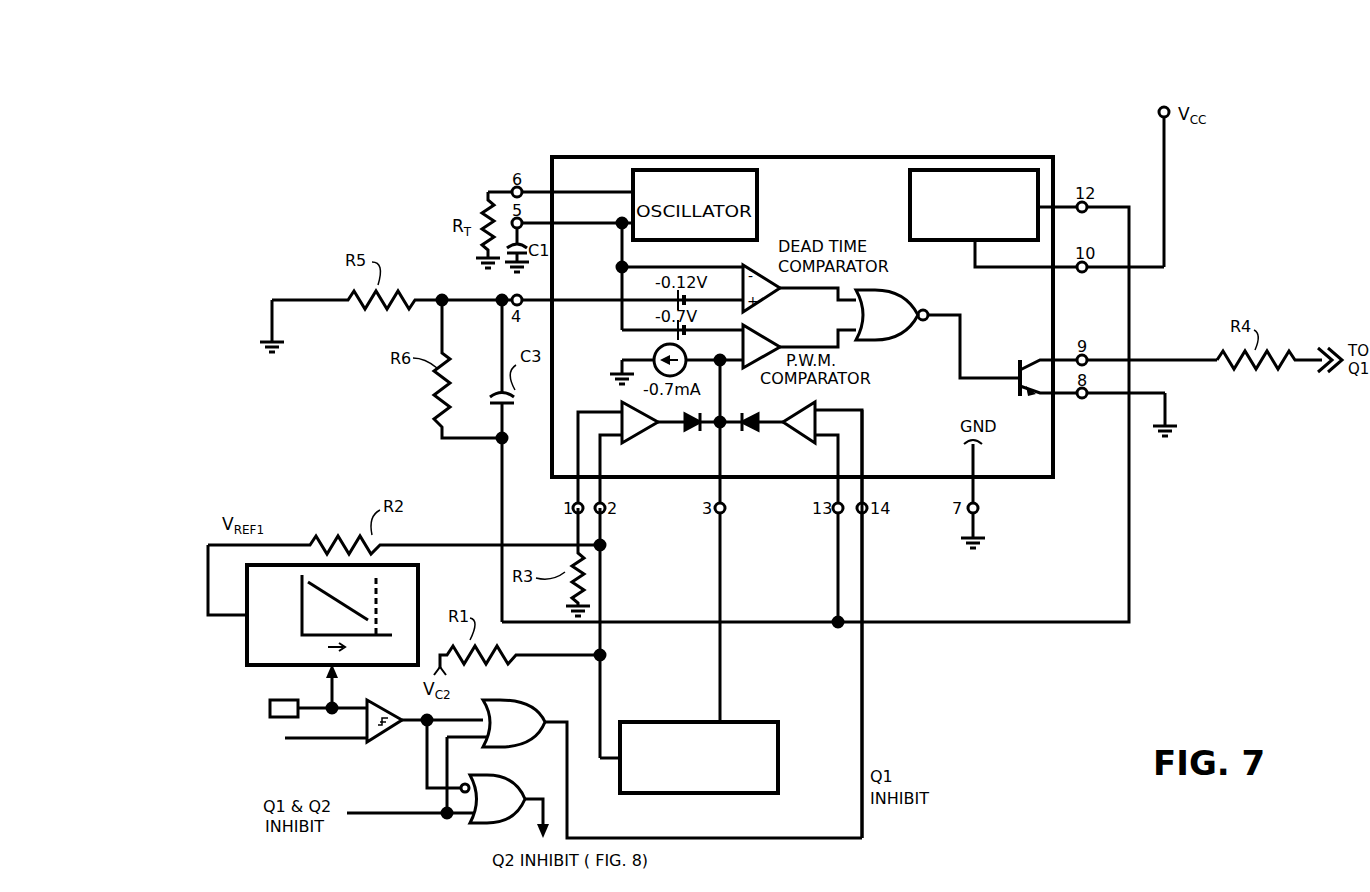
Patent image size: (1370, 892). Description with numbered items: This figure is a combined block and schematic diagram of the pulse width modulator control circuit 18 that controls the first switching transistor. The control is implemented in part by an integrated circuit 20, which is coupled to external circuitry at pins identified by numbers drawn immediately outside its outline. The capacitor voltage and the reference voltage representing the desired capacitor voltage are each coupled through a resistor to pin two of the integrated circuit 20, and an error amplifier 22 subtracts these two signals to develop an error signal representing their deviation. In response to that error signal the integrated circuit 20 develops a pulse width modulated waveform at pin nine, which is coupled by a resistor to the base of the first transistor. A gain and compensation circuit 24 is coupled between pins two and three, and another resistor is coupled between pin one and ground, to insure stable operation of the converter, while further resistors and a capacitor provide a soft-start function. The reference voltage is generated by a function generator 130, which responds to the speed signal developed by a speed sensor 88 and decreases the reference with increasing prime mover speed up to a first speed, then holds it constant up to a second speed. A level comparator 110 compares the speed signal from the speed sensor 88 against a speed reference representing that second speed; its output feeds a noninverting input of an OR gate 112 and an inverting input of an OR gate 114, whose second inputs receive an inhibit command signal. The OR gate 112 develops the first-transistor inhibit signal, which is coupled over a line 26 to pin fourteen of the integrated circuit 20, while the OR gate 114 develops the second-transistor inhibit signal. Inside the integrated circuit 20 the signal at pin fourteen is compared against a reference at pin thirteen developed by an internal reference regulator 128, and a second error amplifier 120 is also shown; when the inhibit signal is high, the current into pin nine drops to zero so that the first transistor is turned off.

The pulse width modulation control circuit 18 is at (632, 142).
The integrated circuit 20 is at (990, 157).
The internal reference regulator 128 is at (910, 188).
The error amplifier 22 is at (645, 438).
The second error amplifier 120 is at (792, 438).
The first function generator 130 is at (418, 590).
The speed sensor 88 is at (276, 700).
The level comparator 110 is at (392, 735).
The OR gate 112 is at (500, 705).
The OR gate 114 is at (500, 787).
The gain and compensation circuit 24 is at (712, 793).
The line 26 is at (864, 737).